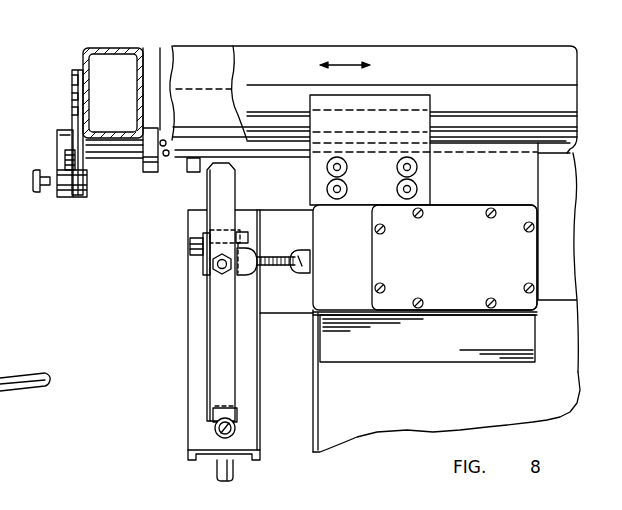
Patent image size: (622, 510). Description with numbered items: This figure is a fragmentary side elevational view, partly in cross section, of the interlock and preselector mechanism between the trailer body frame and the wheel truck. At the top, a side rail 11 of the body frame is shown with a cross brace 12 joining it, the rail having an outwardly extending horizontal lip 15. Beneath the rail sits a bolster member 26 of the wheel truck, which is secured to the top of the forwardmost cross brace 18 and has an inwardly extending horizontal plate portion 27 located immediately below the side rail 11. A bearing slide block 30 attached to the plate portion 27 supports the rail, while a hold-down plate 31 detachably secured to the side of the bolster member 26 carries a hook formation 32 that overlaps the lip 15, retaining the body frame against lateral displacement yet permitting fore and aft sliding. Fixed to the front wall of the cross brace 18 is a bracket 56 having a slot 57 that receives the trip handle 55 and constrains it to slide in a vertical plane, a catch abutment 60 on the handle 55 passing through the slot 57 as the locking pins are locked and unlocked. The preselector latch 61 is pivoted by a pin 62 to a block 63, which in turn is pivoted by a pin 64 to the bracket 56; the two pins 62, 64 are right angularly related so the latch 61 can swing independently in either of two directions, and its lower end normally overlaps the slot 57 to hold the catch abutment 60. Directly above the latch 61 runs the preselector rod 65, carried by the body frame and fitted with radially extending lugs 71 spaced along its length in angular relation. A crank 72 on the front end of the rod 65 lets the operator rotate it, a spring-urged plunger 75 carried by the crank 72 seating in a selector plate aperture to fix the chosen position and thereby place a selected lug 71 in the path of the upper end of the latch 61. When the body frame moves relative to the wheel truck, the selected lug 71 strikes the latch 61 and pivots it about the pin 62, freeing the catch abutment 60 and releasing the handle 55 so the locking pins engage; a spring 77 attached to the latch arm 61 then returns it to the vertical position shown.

The side rail 11 is at (537, 98).
The cross brace 12 is at (113, 47).
The horizontal lip 15 is at (565, 118).
The cross brace 18 is at (362, 235).
The bolster member 26 is at (528, 175).
The horizontal plate portion 27 is at (498, 153).
The bearing slide block 30 is at (380, 137).
The hold-down plate 31 is at (433, 177).
The hook formation 32 is at (417, 100).
The trip handle 55 is at (233, 473).
The bracket 56 is at (188, 347).
The slot 57 is at (236, 426).
The catch abutment 60 is at (212, 412).
The preselector latch 61 is at (237, 182).
The pin 62 is at (210, 267).
The block 63 is at (223, 277).
The pin 64 is at (188, 232).
The preselector rod 65 is at (115, 151).
The lug 71 is at (192, 173).
The crank 72 is at (57, 136).
The plunger 75 is at (37, 193).
The spring 77 is at (278, 257).